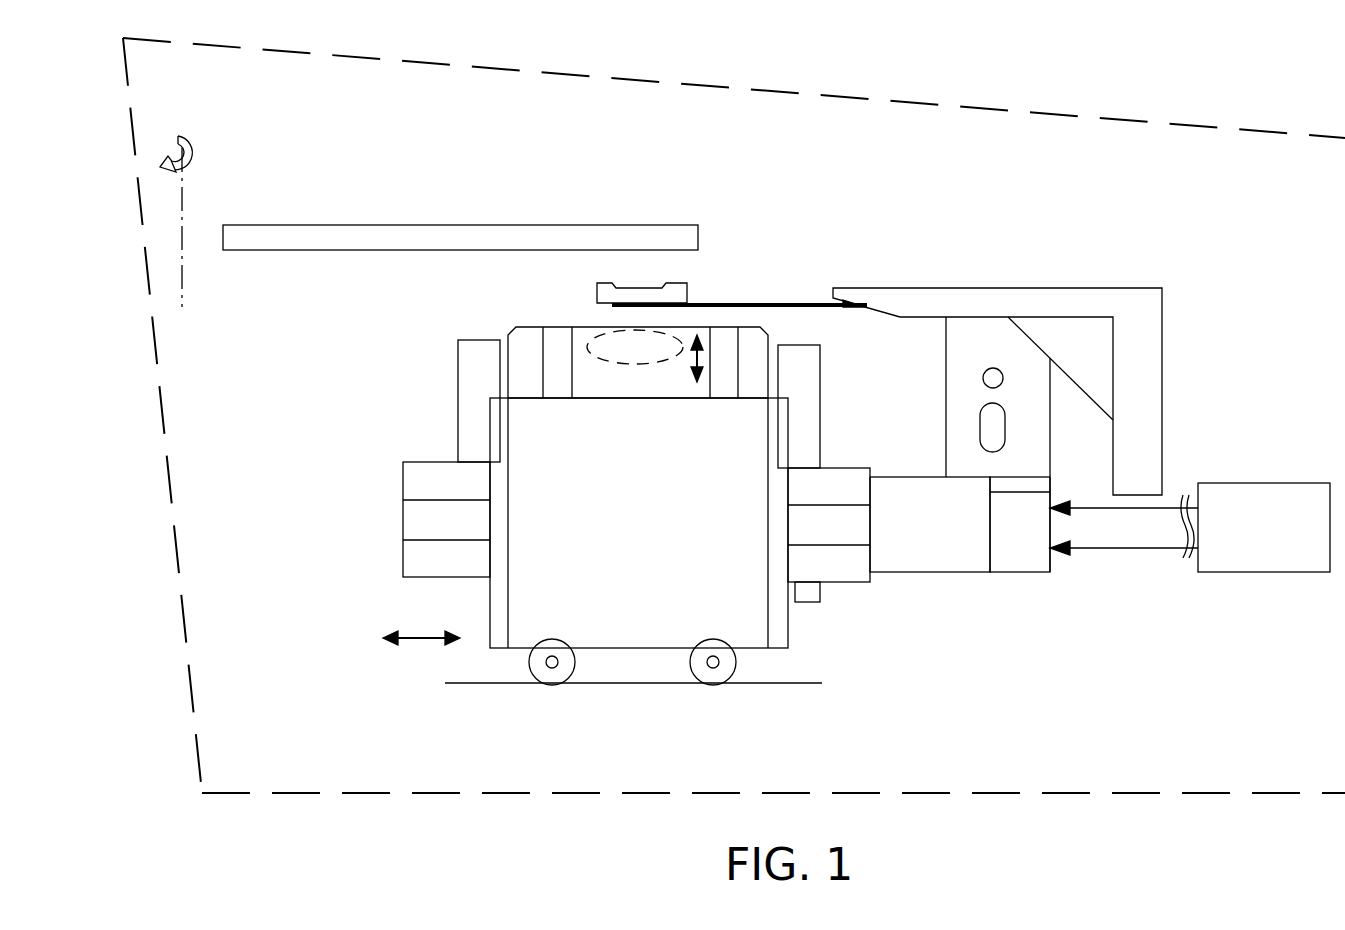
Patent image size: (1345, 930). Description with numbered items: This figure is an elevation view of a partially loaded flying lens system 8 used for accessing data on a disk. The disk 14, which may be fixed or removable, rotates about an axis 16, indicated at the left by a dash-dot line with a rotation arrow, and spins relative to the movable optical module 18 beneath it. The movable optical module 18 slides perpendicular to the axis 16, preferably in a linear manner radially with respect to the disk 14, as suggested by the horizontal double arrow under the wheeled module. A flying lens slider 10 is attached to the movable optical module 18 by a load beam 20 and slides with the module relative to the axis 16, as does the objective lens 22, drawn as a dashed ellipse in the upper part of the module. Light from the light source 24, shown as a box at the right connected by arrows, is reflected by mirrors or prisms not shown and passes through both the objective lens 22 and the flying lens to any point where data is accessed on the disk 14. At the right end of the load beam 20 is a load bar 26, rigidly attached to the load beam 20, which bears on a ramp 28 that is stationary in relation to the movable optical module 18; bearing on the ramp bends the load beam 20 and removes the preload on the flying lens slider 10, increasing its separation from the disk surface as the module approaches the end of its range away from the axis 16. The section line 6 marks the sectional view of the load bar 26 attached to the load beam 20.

The flying lens system 8 is at (1050, 113).
The axis 16 is at (183, 212).
The disk 14 is at (475, 225).
The flying lens slider 10 is at (687, 288).
The load beam 20 is at (768, 303).
The load bar 26 is at (847, 302).
The ramp 28 is at (962, 288).
The movable optical module 18 is at (788, 633).
The objective lens 22 is at (588, 352).
The light source 24 is at (1243, 572).
The section line 6— 6 is at (532, 312).